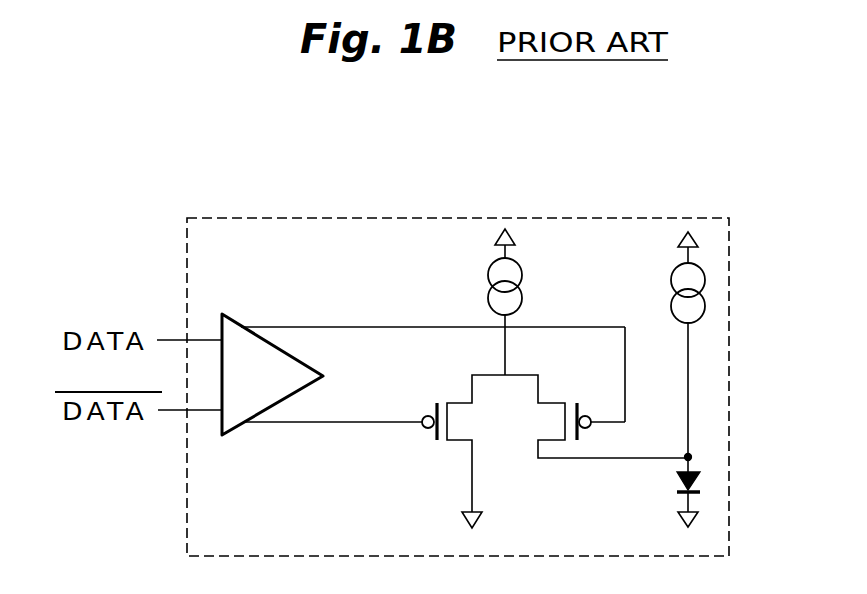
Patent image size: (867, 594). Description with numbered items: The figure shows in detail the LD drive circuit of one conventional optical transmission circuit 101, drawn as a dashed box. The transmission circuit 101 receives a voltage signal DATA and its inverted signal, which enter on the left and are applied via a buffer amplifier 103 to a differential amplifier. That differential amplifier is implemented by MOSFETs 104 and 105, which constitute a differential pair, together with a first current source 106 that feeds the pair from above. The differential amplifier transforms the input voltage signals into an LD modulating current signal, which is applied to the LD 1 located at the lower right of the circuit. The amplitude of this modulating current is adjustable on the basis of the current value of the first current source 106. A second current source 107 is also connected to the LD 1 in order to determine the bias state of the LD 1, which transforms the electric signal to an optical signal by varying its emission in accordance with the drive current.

The optical transmission circuit 101 is at (617, 218).
The buffer amplifier 103 is at (228, 313).
The MOSFET 104 is at (441, 444).
The MOSFET 105 is at (573, 400).
The first current source 106 is at (522, 274).
The second current source 107 is at (705, 278).
The LD 1 is at (701, 481).